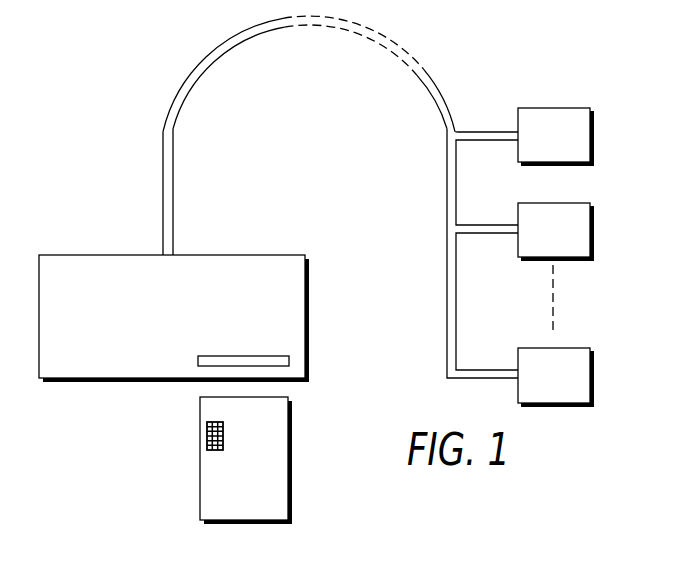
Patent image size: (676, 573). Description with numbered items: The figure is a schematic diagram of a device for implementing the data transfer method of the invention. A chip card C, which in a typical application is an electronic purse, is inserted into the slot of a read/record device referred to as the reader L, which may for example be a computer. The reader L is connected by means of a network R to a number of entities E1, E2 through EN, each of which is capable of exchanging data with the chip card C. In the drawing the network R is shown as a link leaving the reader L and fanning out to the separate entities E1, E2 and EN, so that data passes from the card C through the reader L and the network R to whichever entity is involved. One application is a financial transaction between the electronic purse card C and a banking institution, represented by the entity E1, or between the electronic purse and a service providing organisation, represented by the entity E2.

The network R is at (251, 33).
The reader L is at (297, 343).
The chip card C is at (275, 484).
The entity E1 is at (556, 137).
The entity E2 is at (556, 232).
The entity EN is at (556, 377).